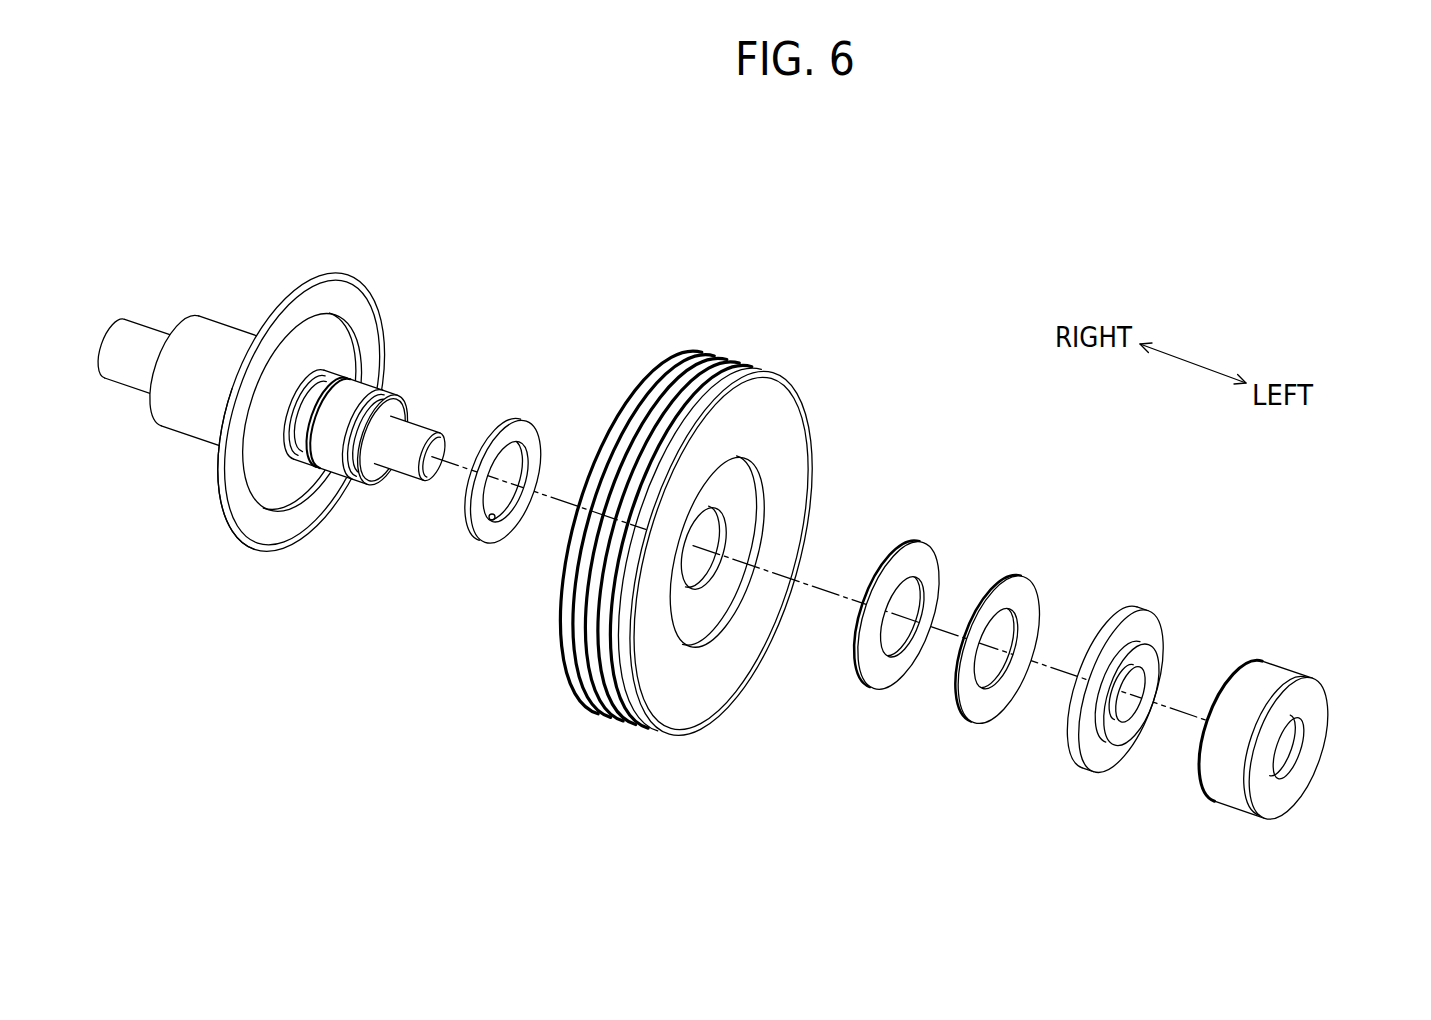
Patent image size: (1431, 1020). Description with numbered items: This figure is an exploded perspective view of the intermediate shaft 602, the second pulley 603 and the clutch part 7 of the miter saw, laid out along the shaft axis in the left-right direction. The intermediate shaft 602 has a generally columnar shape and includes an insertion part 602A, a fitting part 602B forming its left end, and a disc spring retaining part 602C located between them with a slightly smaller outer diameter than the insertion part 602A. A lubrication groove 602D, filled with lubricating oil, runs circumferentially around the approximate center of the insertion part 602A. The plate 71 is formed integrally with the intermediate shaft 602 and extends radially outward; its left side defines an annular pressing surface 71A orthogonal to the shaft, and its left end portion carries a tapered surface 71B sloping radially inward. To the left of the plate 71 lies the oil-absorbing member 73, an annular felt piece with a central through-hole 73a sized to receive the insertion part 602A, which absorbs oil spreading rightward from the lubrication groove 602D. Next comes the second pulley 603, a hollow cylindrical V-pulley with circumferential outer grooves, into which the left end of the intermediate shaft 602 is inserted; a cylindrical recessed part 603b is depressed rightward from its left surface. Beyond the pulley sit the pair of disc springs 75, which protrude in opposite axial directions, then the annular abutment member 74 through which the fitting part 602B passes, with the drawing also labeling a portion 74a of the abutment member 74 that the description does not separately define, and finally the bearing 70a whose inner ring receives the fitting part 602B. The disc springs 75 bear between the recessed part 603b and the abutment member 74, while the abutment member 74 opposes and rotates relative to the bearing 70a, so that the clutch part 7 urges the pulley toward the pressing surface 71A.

The intermediate shaft 602 is at (207, 347).
The insertion part 602A is at (353, 397).
The fitting part 602B is at (400, 457).
The disc spring retaining part 602C is at (357, 450).
The lubrication groove 602D is at (331, 460).
The plate 71 is at (348, 293).
The pressing surface 71A is at (365, 316).
The tapered surface 71B is at (245, 540).
The oil-absorbing member 73 is at (522, 428).
The through-hole 73a is at (493, 521).
The second pulley 603 is at (723, 357).
The recessed part 603b is at (703, 623).
The pair of disc springs 75 is at (975, 702).
The abutment member 74 is at (1142, 622).
The boss of bushing 74a is at (1120, 715).
The bearing 70a is at (1310, 697).
The clutch part 7 is at (1008, 477).